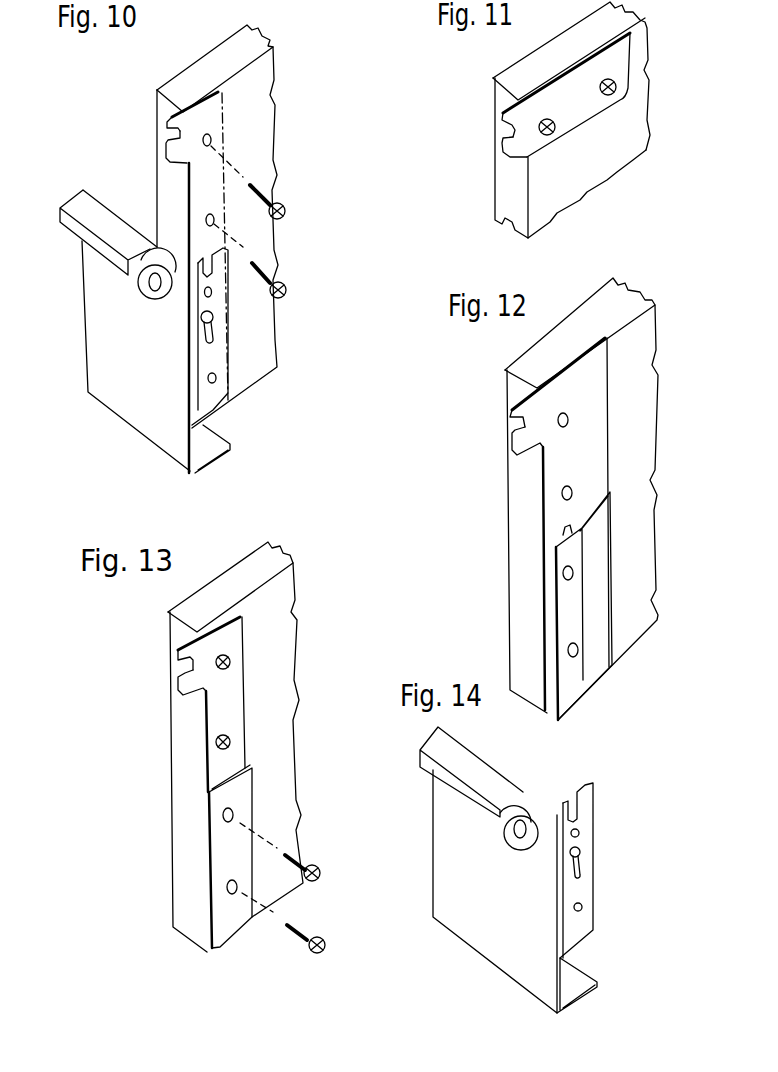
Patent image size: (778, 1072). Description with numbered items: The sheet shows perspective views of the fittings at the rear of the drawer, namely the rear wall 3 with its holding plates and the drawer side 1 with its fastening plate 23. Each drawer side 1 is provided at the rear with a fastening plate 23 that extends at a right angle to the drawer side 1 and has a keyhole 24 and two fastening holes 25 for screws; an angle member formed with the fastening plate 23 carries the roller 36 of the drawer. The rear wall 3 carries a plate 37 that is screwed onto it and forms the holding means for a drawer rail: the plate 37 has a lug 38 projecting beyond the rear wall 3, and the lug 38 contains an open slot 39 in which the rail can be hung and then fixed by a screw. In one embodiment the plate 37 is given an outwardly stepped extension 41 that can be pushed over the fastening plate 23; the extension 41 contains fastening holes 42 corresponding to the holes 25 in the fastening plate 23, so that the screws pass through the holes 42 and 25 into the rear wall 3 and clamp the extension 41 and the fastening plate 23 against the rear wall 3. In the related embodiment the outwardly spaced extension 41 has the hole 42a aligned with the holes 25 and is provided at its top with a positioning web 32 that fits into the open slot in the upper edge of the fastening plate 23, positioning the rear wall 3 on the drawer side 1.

In FIG. 10, the drawer side 1 is at (112, 300).
In FIG. 14, the drawer side 1 is at (505, 925).
In FIG. 11, the rear wall 3 is at (605, 155).
In FIG. 12, the rear wall 3 is at (638, 598).
In FIG. 13, the rear wall 3 is at (242, 582).
In FIG. 10, the fastening plate 23 is at (215, 348).
In FIG. 14, the fastening plate 23 is at (580, 888).
In FIG. 10, the keyhole 24 is at (217, 315).
In FIG. 14, the keyhole 24 is at (580, 853).
In FIG. 10, the fastening holes 25 is at (212, 288).
In FIG. 14, the fastening holes 25 is at (580, 832).
In FIG. 12, the positioning web 32 is at (563, 528).
In FIG. 10, the roller 36 is at (148, 298).
In FIG. 14, the roller 36 is at (542, 805).
In FIG. 10, the plate 37 is at (207, 180).
In FIG. 11, the plate 37 is at (578, 105).
In FIG. 12, the plate 37 is at (580, 443).
In FIG. 13, the plate 37 is at (227, 722).
In FIG. 10, the lug 38 is at (170, 120).
In FIG. 11, the lug 38 is at (513, 148).
In FIG. 12, the lug 38 is at (510, 412).
In FIG. 13, the lug 38 is at (175, 653).
In FIG. 10, the open slot 39 is at (168, 135).
In FIG. 11, the open slot 39 is at (508, 127).
In FIG. 12, the open slot 39 is at (512, 425).
In FIG. 13, the open slot 39 is at (183, 665).
In FIG. 12, the outwardly stepped extension 41 is at (573, 682).
In FIG. 13, the outwardly stepped extension 41 is at (233, 913).
In FIG. 13, the fastening holes 42 is at (227, 888).
In FIG. 12, the hole 42a is at (565, 573).